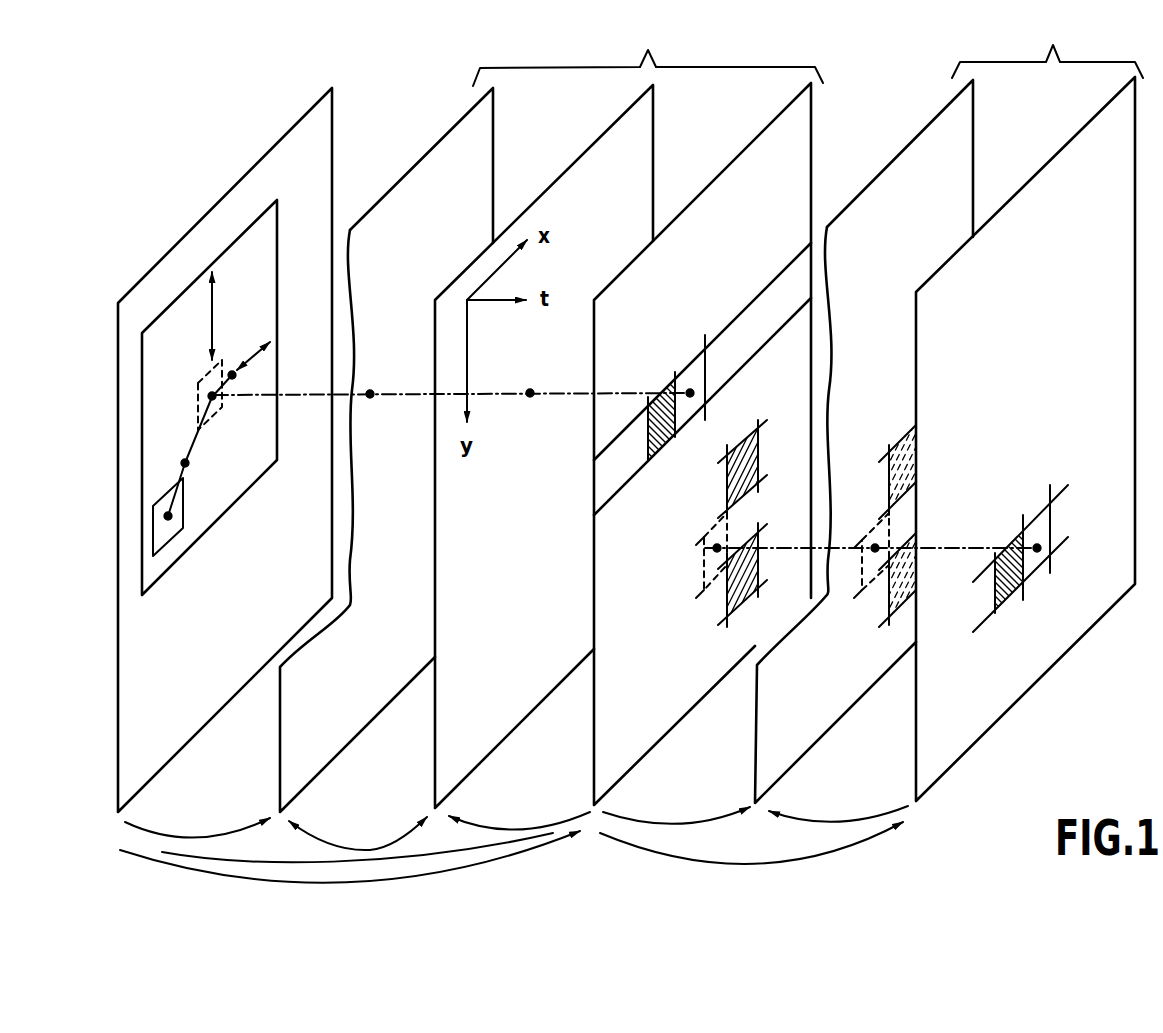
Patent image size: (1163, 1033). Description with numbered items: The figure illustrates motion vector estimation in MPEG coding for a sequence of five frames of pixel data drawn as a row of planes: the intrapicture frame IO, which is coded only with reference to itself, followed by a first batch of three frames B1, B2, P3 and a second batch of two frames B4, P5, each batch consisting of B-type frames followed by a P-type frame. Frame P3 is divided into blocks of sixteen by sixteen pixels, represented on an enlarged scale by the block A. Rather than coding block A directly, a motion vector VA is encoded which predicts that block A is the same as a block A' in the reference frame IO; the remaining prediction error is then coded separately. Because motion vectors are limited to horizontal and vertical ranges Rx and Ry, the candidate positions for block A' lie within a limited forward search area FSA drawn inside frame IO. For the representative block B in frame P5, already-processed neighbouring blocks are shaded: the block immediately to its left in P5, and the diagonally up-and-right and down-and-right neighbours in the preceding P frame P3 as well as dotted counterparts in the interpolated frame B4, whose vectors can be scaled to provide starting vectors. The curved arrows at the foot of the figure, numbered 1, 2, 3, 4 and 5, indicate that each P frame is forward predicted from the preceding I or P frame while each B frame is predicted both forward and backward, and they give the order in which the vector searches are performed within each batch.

The intrapicture frame IO is at (312, 110).
The bidirectional predicted frame B1 is at (468, 112).
The bidirectional predicted frame B2 is at (628, 110).
The predicted frame P3 is at (783, 108).
The bidirectional predicted frame B4 is at (950, 101).
The predicted frame P5 is at (1105, 100).
The forward search area FSA is at (192, 548).
The matching block in reference frame A' is at (189, 498).
The motion vector VA is at (198, 438).
The vertical motion vector range Ry is at (228, 316).
The horizontal motion vector range Rx is at (249, 348).
The current block A is at (690, 365).
The current block B is at (1043, 530).
The first vector search step 1 is at (196, 834).
The second vector search step 2 is at (391, 836).
The third vector search step 3 is at (517, 838).
The fourth vector search step 4 is at (329, 836).
The fifth vector search step 5 is at (367, 880).